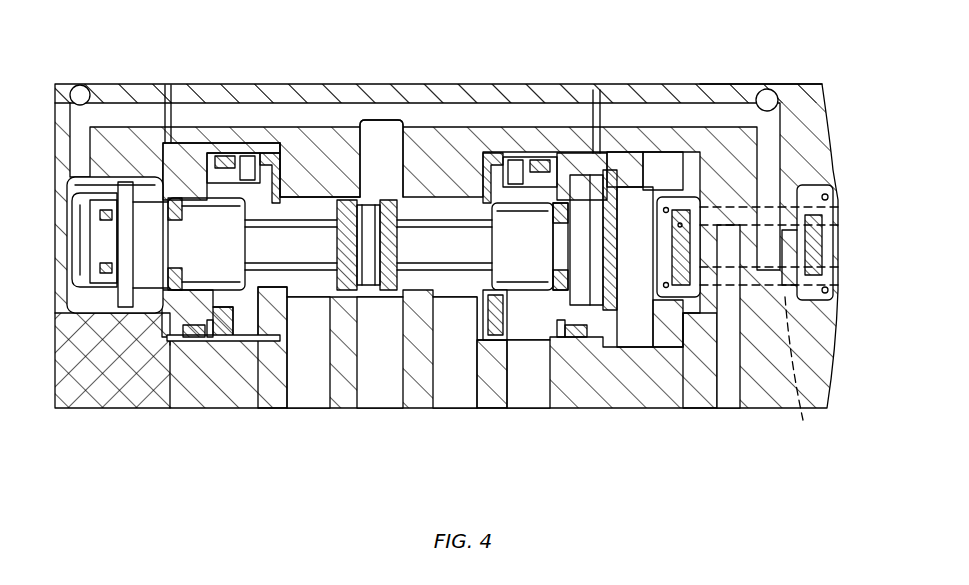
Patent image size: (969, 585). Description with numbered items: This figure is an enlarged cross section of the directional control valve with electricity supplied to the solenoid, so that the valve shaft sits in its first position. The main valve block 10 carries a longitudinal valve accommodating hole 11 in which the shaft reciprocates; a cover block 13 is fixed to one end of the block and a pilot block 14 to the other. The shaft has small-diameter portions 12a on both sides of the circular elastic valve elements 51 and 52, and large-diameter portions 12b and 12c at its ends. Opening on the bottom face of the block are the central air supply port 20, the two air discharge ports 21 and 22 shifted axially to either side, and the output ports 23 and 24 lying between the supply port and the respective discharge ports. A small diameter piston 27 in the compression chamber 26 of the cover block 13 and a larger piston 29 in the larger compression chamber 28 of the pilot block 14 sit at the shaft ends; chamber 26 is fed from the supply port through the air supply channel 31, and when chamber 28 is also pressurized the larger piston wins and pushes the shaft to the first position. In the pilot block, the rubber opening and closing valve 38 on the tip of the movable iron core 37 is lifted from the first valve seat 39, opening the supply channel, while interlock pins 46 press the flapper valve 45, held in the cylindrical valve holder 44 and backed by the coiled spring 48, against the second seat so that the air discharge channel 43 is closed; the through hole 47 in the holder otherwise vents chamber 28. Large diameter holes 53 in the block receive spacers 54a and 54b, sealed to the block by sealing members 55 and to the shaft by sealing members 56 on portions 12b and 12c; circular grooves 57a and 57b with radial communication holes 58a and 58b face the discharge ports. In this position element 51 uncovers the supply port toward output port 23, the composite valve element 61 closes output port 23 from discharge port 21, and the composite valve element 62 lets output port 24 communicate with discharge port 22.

The main valve block 10 is at (482, 84).
The valve accommodating hole 11 is at (297, 200).
The small-diameter portions 12a is at (322, 232).
The large-diameter portion 12b is at (514, 215).
The large-diameter portion 12c is at (214, 215).
The cover block 13 is at (116, 84).
The pilot block 14 is at (727, 95).
The air supply port 20 is at (378, 405).
The air discharge port 21 is at (537, 405).
The air discharge port 22 is at (224, 408).
The output port 23 is at (455, 405).
The output port 24 is at (303, 405).
The compression chamber 26 is at (78, 300).
The small diameter piston 27 is at (90, 227).
The compression chamber 28 is at (687, 405).
The piston 29 is at (610, 330).
The air supply channel 31 is at (415, 120).
The movable iron core 37 is at (827, 263).
The opening and closing valve 38 is at (833, 227).
The first valve seat 39 is at (835, 205).
The air discharge channel 43 is at (727, 405).
The valve holder 44 is at (670, 152).
The flapper valve 45 is at (690, 195).
The interlock pins 46 is at (803, 420).
The through hole 47 is at (672, 350).
The coiled spring 48 is at (628, 160).
The elastic valve element 51 is at (385, 215).
The elastic valve element 52 is at (345, 215).
The large diameter holes 53 is at (209, 340).
The spacer 54a is at (598, 110).
The spacer 54b is at (155, 100).
The sealing members 55 is at (185, 338).
The sealing members 56 is at (187, 165).
The circular groove 57a is at (535, 175).
The circular groove 57b is at (238, 160).
The communication holes 58a is at (500, 340).
The communication holes 58b is at (232, 340).
The composite valve element 61 is at (490, 408).
The composite valve element 62 is at (268, 343).